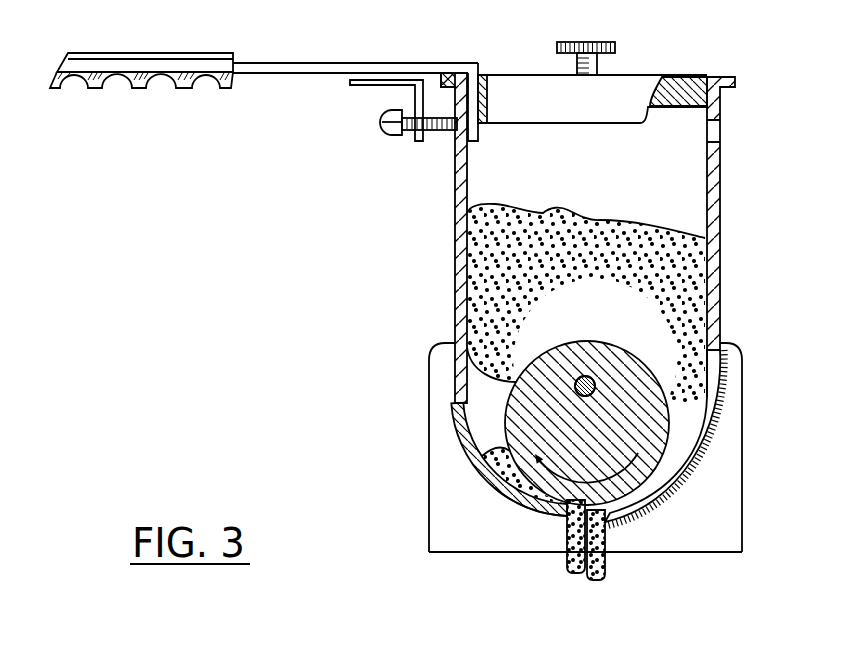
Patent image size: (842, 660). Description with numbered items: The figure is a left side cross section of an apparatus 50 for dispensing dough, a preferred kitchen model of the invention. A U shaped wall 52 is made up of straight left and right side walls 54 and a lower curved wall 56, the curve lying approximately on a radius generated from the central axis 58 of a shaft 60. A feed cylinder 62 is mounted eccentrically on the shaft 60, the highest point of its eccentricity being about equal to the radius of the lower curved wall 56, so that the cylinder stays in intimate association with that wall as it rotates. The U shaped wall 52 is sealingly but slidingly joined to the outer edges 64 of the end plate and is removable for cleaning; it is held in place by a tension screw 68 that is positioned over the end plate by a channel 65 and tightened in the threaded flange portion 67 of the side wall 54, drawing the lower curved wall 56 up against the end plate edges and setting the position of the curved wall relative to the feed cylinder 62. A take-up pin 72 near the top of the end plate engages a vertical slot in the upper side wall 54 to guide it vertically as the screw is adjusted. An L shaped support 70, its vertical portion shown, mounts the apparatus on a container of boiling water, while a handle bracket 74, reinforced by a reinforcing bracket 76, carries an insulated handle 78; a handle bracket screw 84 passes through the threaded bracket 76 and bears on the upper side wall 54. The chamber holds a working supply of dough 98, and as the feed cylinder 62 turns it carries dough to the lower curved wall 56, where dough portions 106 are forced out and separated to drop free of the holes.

The apparatus for dispensing dough 50 is at (455, 232).
The U shaped wall 52 is at (468, 450).
The straight side wall 54 is at (720, 228).
The lower curved wall 56 is at (522, 498).
The central axis 58 is at (592, 380).
The shaft 60 is at (597, 390).
The feed cylinder 62 is at (527, 403).
The outer edges of end plate 64 is at (455, 145).
The channel 65 is at (681, 106).
The flange portion 67 is at (623, 100).
The tension screw 68 is at (580, 43).
The L shaped support 70 is at (440, 357).
The take-up pin 72 is at (723, 113).
The handle bracket 74 is at (303, 63).
The reinforcing bracket 76 is at (357, 86).
The insulated handle 78 is at (175, 95).
The handle bracket screw 84 is at (387, 132).
The dough 98 is at (622, 279).
The dough portions 106 is at (598, 566).